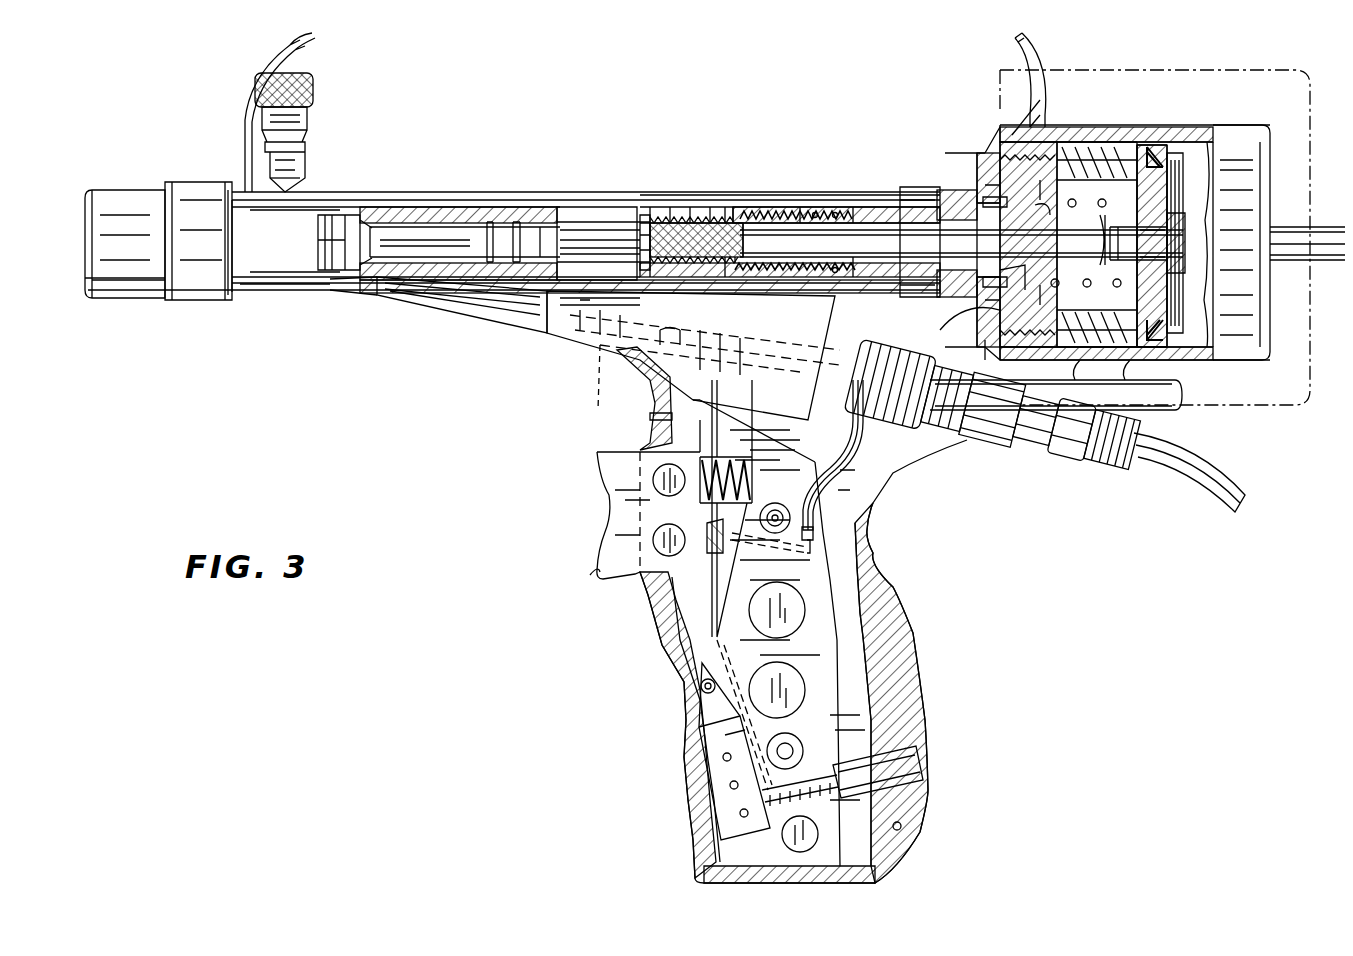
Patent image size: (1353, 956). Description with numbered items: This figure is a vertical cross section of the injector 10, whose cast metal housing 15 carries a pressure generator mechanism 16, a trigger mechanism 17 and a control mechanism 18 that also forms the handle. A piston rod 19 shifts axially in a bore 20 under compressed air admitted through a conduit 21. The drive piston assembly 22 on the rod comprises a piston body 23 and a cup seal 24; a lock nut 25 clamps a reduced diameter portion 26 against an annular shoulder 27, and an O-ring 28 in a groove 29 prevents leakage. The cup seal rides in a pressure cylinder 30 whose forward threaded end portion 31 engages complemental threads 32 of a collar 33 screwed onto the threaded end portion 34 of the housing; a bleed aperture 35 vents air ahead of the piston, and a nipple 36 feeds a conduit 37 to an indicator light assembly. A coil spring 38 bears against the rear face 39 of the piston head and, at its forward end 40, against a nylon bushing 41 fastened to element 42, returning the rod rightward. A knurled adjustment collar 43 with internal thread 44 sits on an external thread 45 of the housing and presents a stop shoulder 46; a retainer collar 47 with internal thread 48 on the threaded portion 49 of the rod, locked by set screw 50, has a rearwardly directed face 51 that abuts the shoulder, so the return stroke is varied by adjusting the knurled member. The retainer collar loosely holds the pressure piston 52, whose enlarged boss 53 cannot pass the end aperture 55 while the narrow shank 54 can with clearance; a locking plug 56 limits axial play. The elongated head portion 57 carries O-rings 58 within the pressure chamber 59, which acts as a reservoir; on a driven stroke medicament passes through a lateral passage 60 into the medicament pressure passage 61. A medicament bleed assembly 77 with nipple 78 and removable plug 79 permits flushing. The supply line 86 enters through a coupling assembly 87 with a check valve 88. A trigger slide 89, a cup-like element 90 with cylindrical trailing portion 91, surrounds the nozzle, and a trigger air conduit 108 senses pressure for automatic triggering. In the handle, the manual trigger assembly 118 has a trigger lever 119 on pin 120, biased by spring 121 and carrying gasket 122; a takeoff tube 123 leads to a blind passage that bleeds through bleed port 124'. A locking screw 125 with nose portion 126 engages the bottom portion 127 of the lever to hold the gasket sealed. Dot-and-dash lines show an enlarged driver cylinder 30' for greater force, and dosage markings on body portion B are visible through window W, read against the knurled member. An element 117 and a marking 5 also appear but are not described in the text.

The injector 10 is at (597, 142).
The housing 15 is at (512, 330).
The pressure generator mechanism 16 is at (933, 175).
The trigger mechanism 17 is at (162, 181).
The control mechanism 18 is at (610, 610).
The piston rod 19 is at (858, 232).
The bore 20 is at (542, 226).
The conduit 21 is at (1335, 262).
The drive piston assembly 22 is at (1132, 150).
The piston body 23 is at (1112, 215).
The cup seal 24 is at (1160, 148).
The lock nut 25 is at (1187, 228).
The reduced diameter portion 26 is at (1150, 200).
The annular shoulder 27 is at (1187, 262).
The O-ring 28 is at (1102, 280).
The groove 29 is at (1065, 278).
The pressure cylinder 30 is at (1237, 228).
The enlarged driver cylinder 30' is at (1155, 219).
The forward threaded end portion 31 is at (1040, 140).
The complemental threads 32 is at (1025, 140).
The collar 33 is at (995, 172).
The threaded end portion 34 is at (975, 172).
The bleed aperture 35 is at (1084, 380).
The nipple 36 is at (1062, 125).
The conduit 37 is at (1013, 40).
The coil spring 38 is at (1047, 233).
The rear face 39 is at (1134, 380).
The forward end 40 is at (1000, 233).
The nylon bushing 41 is at (935, 310).
The element 42 is at (984, 356).
The knurled adjustment collar 43 is at (770, 200).
The internal thread 44 is at (803, 206).
The external thread 45 is at (817, 212).
The stop shoulder 46 is at (742, 206).
The retainer collar 47 is at (710, 206).
The internal thread 48 is at (670, 206).
The externally threaded portion 49 is at (692, 206).
The set screw 50 is at (730, 206).
The rearwardly directed face 51 is at (720, 290).
The pressure piston 52 is at (575, 235).
The enlarged boss 53 is at (648, 232).
The narrow shank 54 is at (612, 230).
The end aperture 55 is at (595, 325).
The locking plug 56 is at (664, 210).
The elongated head portion 57 is at (518, 228).
The O-rings 58 is at (488, 285).
The pressure chamber 59 is at (418, 228).
The lateral passage 60 is at (392, 285).
The medicament pressure passage 61 is at (296, 285).
The medicament bleed assembly 77 is at (343, 138).
The nipple 78 is at (308, 165).
The removable plug 79 is at (315, 85).
The medicament supply line 86 is at (1205, 470).
The coupling assembly 87 is at (1000, 445).
The check valve 88 is at (606, 381).
The trigger slide 89 is at (125, 190).
The cup-like element 90 is at (90, 298).
The cylindrical trailing portion 91 is at (210, 185).
The trigger air conduit 108 is at (1183, 395).
The air line 117 is at (245, 120).
The manual trigger assembly 118 is at (595, 572).
The trigger lever 119 is at (672, 615).
The pin 120 is at (700, 688).
The spring 121 is at (749, 481).
The gasket member 122 is at (640, 512).
The takeoff tube 123 is at (868, 503).
The bleed port 124' is at (685, 495).
The locking screw 125 is at (925, 775).
The nose portion 126 is at (762, 815).
The bottom portion 127 is at (735, 800).
The section line 5 is at (640, 300).
The window W is at (882, 189).
The body portion B is at (902, 198).